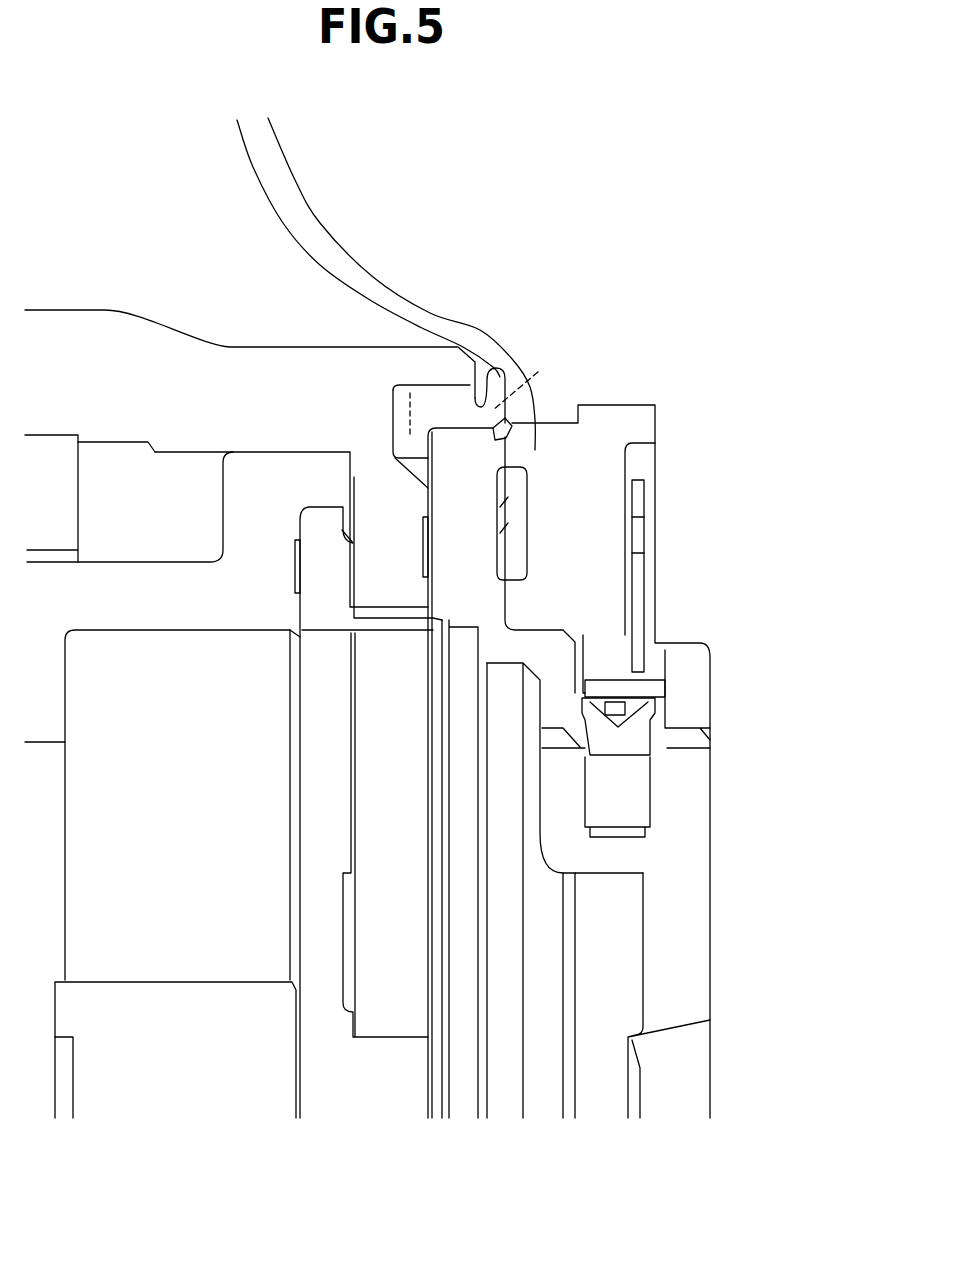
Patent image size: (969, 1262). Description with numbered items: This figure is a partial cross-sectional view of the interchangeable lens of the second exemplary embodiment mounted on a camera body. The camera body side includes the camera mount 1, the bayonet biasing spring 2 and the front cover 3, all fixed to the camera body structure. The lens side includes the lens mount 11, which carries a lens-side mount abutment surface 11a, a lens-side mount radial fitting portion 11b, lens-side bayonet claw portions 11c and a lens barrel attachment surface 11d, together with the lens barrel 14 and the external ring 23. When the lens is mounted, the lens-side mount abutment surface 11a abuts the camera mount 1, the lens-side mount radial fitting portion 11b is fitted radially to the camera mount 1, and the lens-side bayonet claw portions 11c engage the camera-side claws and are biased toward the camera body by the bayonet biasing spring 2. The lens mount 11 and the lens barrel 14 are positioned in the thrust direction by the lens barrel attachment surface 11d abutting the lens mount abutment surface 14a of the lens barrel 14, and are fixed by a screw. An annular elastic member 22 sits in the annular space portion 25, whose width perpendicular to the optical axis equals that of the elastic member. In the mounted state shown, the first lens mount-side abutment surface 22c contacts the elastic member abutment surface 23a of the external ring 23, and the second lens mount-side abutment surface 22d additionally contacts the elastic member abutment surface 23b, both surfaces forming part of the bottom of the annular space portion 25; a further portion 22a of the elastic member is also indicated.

The camera mount 1 is at (605, 468).
The bayonet biasing spring 2 is at (637, 617).
The front cover 3 is at (287, 203).
The lens mount 11 is at (535, 482).
The lens-side mount abutment surface 11a is at (535, 590).
The lens-side mount radial fitting portion 11b is at (548, 620).
The lens-side bayonet claw portions 11c is at (695, 687).
The lens barrel attachment surface 11d is at (533, 422).
The lens barrel 14 is at (107, 583).
The lens mount abutment surface 14a is at (420, 652).
The annular elastic member 22 is at (445, 398).
The seal lip 22a is at (500, 405).
The first lens mount-side abutment surface 22c is at (392, 430).
The second lens mount-side abutment surface 22d is at (403, 395).
The external ring 23 is at (143, 350).
The elastic member abutment surface 23a is at (390, 447).
The elastic member abutment surface 23b is at (392, 395).
The annular space portion 25 is at (406, 398).